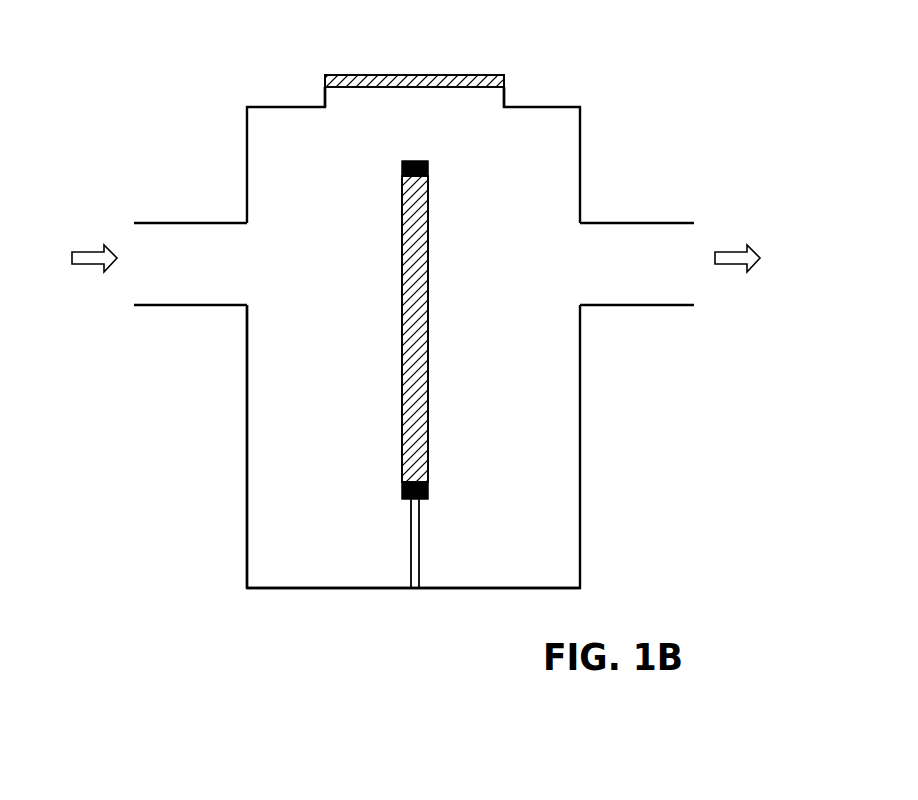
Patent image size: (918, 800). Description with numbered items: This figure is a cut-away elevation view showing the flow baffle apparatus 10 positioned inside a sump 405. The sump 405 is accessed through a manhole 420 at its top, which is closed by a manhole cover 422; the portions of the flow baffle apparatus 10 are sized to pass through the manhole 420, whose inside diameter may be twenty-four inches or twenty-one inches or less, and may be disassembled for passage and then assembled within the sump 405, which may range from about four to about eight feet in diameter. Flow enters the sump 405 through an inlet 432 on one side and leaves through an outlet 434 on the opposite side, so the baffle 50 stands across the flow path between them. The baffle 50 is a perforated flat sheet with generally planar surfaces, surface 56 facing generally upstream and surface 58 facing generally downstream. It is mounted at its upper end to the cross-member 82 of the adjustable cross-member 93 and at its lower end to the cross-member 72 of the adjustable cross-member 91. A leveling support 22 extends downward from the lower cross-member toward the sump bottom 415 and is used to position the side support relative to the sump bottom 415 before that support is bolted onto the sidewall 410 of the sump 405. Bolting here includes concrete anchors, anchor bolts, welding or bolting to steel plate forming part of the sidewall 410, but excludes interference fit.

The flow baffle apparatus 10 is at (660, 53).
The leveling support 22 is at (420, 535).
The baffle 50 is at (428, 275).
The surface 56 is at (402, 215).
The surface 58 is at (428, 210).
The cross-member 72 is at (428, 488).
The cross-member 82 is at (428, 170).
The adjustable cross-member 91 is at (402, 488).
The adjustable cross-member 93 is at (417, 161).
The sump 405 is at (523, 525).
The sidewall 410 is at (247, 506).
The sump bottom 415 is at (343, 588).
The manhole 420 is at (463, 102).
The manhole cover 422 is at (453, 75).
The inlet 432 is at (173, 305).
The outlet 434 is at (668, 223).